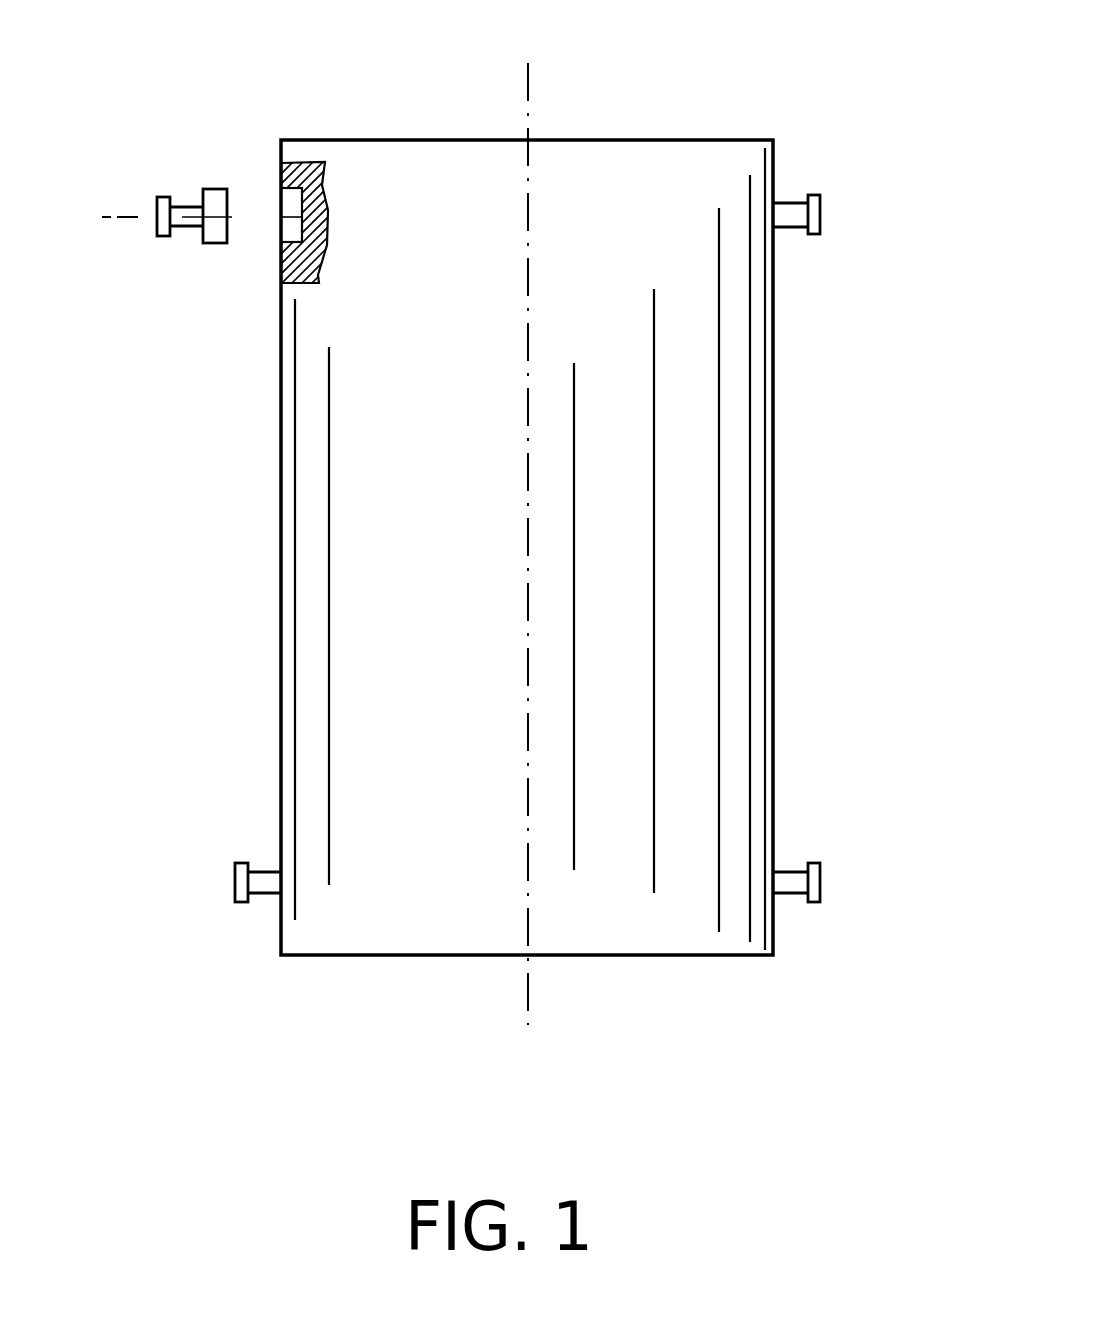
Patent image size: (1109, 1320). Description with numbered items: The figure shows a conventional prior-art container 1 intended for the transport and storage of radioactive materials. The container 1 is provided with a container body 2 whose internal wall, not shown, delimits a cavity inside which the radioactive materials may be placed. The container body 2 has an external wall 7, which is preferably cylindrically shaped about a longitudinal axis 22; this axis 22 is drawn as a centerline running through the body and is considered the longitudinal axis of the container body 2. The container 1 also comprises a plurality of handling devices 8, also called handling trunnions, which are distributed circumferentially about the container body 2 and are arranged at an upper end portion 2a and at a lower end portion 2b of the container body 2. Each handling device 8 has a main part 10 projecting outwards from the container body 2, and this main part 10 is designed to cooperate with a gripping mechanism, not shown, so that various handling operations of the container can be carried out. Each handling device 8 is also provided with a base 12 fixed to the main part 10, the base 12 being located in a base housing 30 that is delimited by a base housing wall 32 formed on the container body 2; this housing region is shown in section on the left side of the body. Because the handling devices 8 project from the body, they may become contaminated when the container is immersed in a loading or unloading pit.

The container 1 is at (766, 70).
The container body 2 is at (340, 262).
The upper end portion 2a is at (781, 257).
The lower end portion 2b is at (780, 938).
The external wall 7 is at (281, 638).
The handling device 8 is at (166, 243).
The main part 10 is at (184, 208).
The base 12 is at (221, 197).
The longitudinal axis 22 is at (529, 90).
The base housing 30 is at (283, 229).
The base housing wall 32 is at (285, 204).